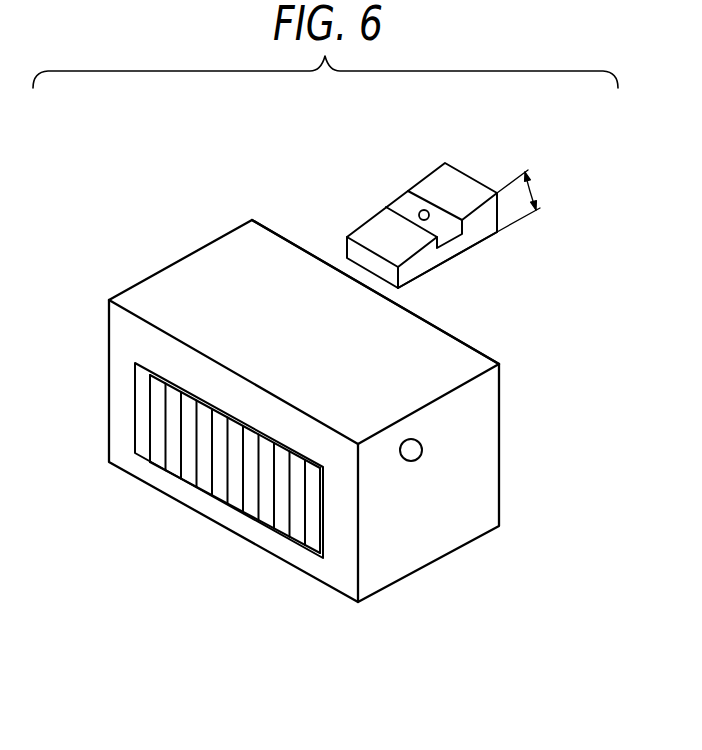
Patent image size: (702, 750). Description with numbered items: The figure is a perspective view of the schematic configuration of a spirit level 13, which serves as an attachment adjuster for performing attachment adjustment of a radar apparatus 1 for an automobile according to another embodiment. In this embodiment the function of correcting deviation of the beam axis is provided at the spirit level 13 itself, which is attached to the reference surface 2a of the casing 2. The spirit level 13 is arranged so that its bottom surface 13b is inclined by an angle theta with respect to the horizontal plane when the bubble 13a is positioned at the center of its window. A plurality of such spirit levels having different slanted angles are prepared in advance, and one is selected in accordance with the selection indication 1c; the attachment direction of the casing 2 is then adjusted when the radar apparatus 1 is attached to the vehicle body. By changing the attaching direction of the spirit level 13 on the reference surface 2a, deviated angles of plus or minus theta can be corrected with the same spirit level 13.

The radar apparatus for an automobile 1 is at (172, 217).
The selection indication 1c is at (422, 452).
The casing 2 is at (512, 446).
The reference surface 2a is at (463, 353).
The spirit level 13 is at (428, 168).
The bubble 13a is at (419, 212).
The bottom surface 13b is at (430, 272).